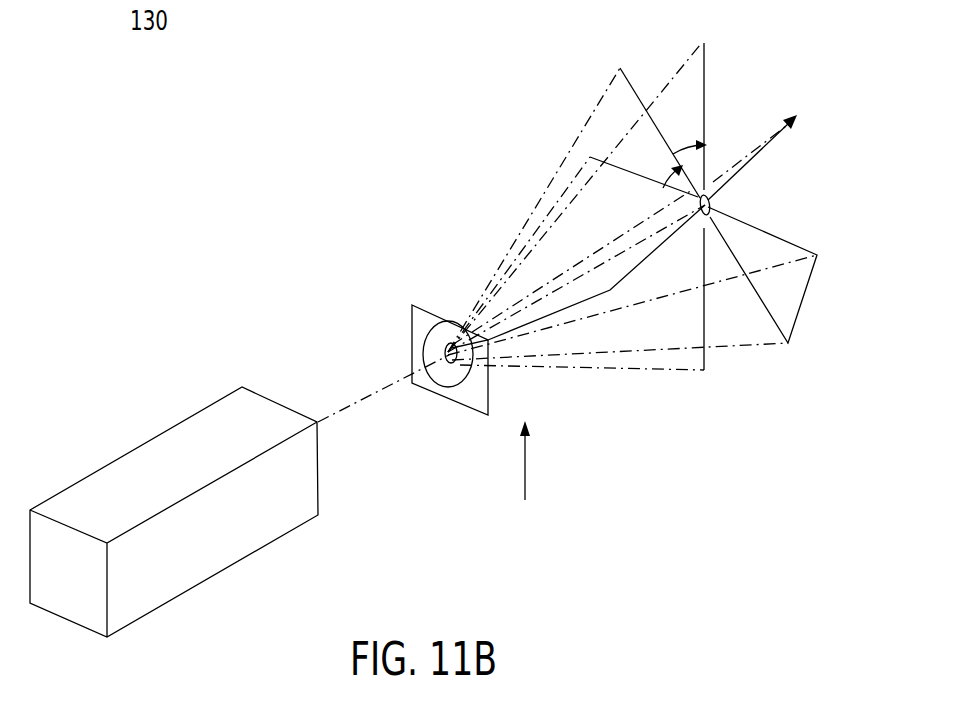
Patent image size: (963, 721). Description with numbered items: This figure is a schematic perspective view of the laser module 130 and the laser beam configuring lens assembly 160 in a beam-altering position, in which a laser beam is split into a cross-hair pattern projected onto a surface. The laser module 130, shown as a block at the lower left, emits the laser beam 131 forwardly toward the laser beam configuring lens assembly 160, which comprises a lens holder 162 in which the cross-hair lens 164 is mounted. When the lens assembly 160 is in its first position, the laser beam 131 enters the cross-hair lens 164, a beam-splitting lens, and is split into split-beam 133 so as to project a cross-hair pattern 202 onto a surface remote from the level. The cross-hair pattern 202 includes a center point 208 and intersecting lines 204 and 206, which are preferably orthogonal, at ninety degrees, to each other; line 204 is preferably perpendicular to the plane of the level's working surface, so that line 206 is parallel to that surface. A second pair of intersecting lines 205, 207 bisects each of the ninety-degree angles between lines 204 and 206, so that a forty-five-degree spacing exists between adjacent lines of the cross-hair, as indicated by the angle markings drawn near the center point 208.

The laser module 130 is at (190, 591).
The laser beam 131 is at (357, 403).
The split-beam 133 is at (620, 372).
The laser beam configuring lens assembly 160 is at (404, 316).
The lens holder 162 is at (423, 390).
The cross-hair lens 164 is at (460, 383).
The cross-hair pattern 202 is at (578, 133).
The line 204 is at (707, 97).
The intersecting line 205 is at (632, 82).
The line 206 is at (762, 230).
The intersecting line 207 is at (747, 165).
The center point 208 is at (717, 175).